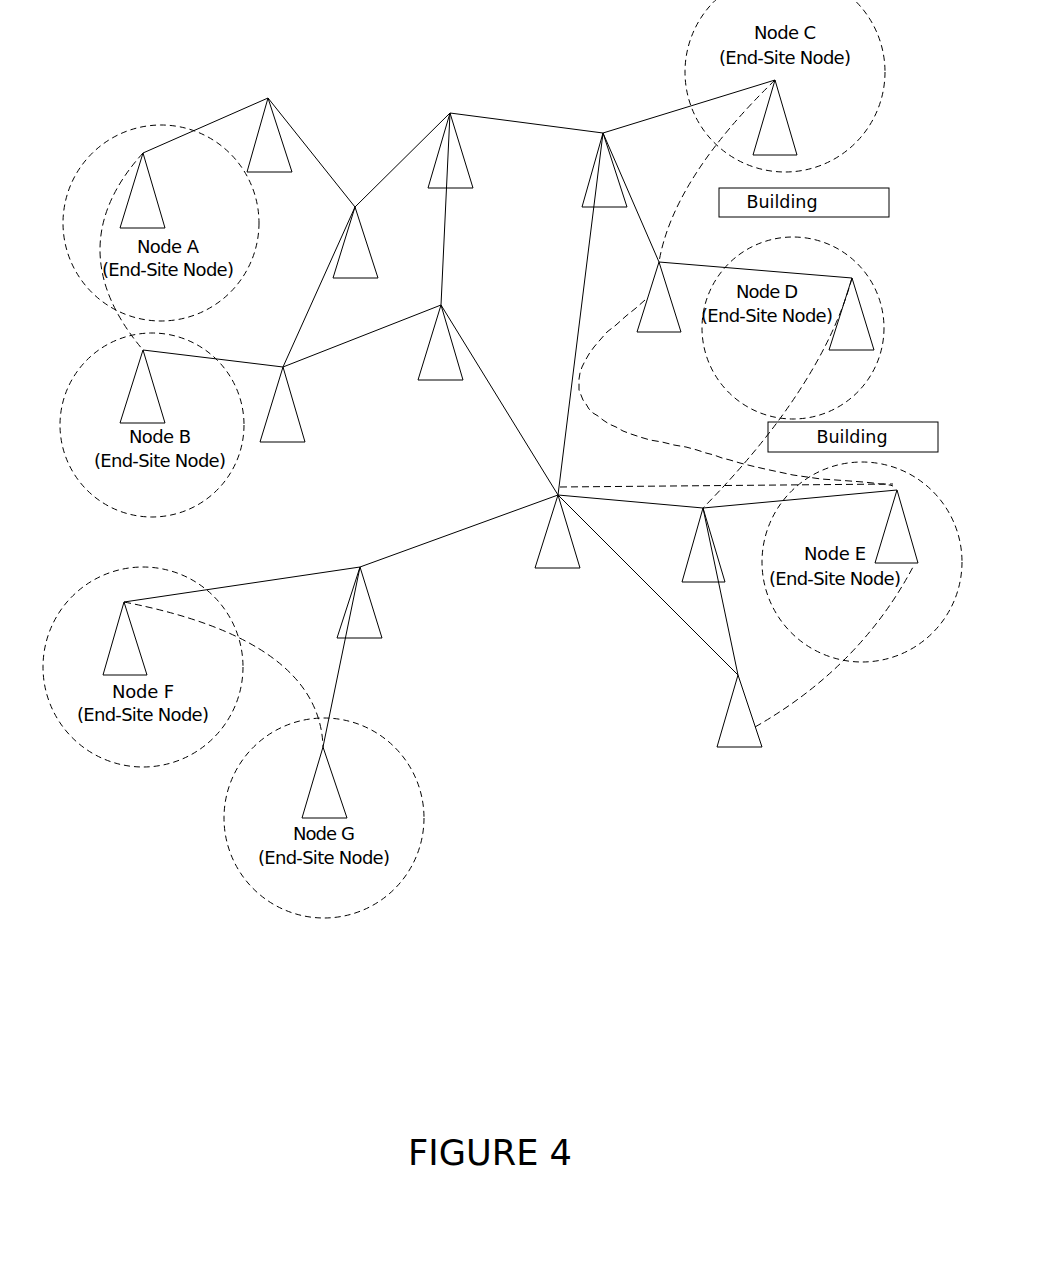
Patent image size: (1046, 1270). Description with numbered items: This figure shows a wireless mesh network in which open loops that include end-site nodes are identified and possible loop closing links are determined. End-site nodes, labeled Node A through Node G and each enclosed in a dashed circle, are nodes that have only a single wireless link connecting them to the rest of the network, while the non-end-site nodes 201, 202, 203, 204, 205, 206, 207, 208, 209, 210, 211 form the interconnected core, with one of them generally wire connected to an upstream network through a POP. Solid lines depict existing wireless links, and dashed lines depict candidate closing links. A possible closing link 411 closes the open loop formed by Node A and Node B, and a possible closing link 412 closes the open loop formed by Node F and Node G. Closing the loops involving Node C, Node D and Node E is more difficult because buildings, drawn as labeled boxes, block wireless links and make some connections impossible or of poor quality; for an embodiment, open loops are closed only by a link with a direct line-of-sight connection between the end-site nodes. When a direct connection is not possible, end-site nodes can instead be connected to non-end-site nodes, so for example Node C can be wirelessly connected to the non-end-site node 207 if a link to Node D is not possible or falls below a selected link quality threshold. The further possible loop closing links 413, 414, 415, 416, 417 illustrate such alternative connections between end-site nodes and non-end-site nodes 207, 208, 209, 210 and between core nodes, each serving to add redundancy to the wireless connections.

The non-end-site node 201 is at (275, 153).
The non-end-site node 202 is at (355, 261).
The non-end-site node 203 is at (461, 169).
The non-end-site node 204 is at (283, 422).
The non-end-site node 205 is at (443, 357).
The non-end-site node 206 is at (607, 188).
The non-end-site node 207 is at (659, 310).
The non-end-site node 208 is at (703, 560).
The non-end-site node 209 is at (739, 730).
The non-end-site node 210 is at (557, 545).
The non-end-site node 211 is at (363, 617).
The closing link 411 is at (100, 212).
The closing link 412 is at (279, 675).
The loop closing link 413 is at (683, 178).
The loop closing link 414 is at (805, 377).
The loop closing link 415 is at (787, 703).
The loop closing link 416 is at (675, 492).
The loop closing link 417 is at (638, 435).